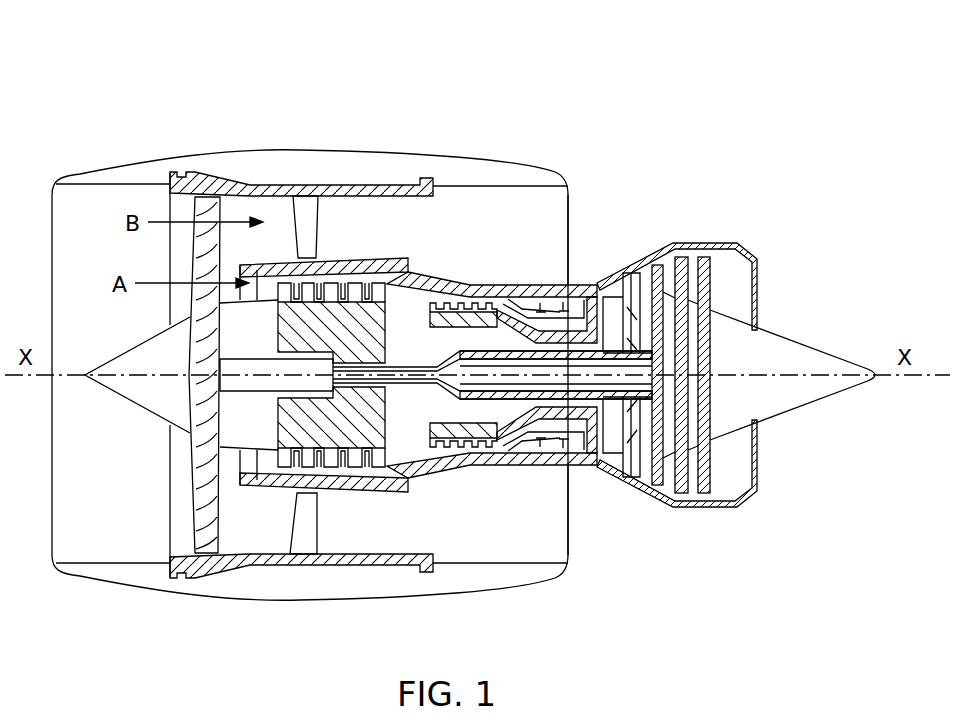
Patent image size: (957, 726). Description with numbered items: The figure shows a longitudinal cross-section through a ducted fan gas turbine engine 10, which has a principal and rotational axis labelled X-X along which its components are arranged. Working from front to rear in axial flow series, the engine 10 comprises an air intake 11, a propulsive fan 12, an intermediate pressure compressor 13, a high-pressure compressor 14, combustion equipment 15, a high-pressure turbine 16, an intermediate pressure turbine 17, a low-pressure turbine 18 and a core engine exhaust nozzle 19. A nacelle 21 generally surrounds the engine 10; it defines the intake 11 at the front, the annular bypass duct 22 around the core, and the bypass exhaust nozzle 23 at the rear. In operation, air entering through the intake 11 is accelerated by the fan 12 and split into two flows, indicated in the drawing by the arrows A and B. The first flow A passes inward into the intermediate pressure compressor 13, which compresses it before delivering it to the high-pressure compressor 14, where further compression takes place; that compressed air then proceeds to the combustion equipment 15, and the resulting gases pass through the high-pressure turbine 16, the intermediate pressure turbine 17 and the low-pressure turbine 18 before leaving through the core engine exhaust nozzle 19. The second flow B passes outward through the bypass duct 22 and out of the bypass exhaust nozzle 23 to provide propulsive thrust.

The ducted fan gas turbine engine 10 is at (95, 110).
The air intake 11 is at (108, 185).
The propulsive fan 12 is at (197, 512).
The intermediate pressure compressor 13 is at (350, 470).
The high-pressure compressor 14 is at (482, 312).
The combustion equipment 15 is at (533, 443).
The high-pressure turbine 16 is at (587, 470).
The intermediate pressure turbine 17 is at (637, 300).
The low-pressure turbine 18 is at (660, 473).
The core engine exhaust nozzle 19 is at (747, 250).
The nacelle 21 is at (340, 148).
The bypass duct 22 is at (521, 229).
The bypass exhaust nozzle 23 is at (567, 186).